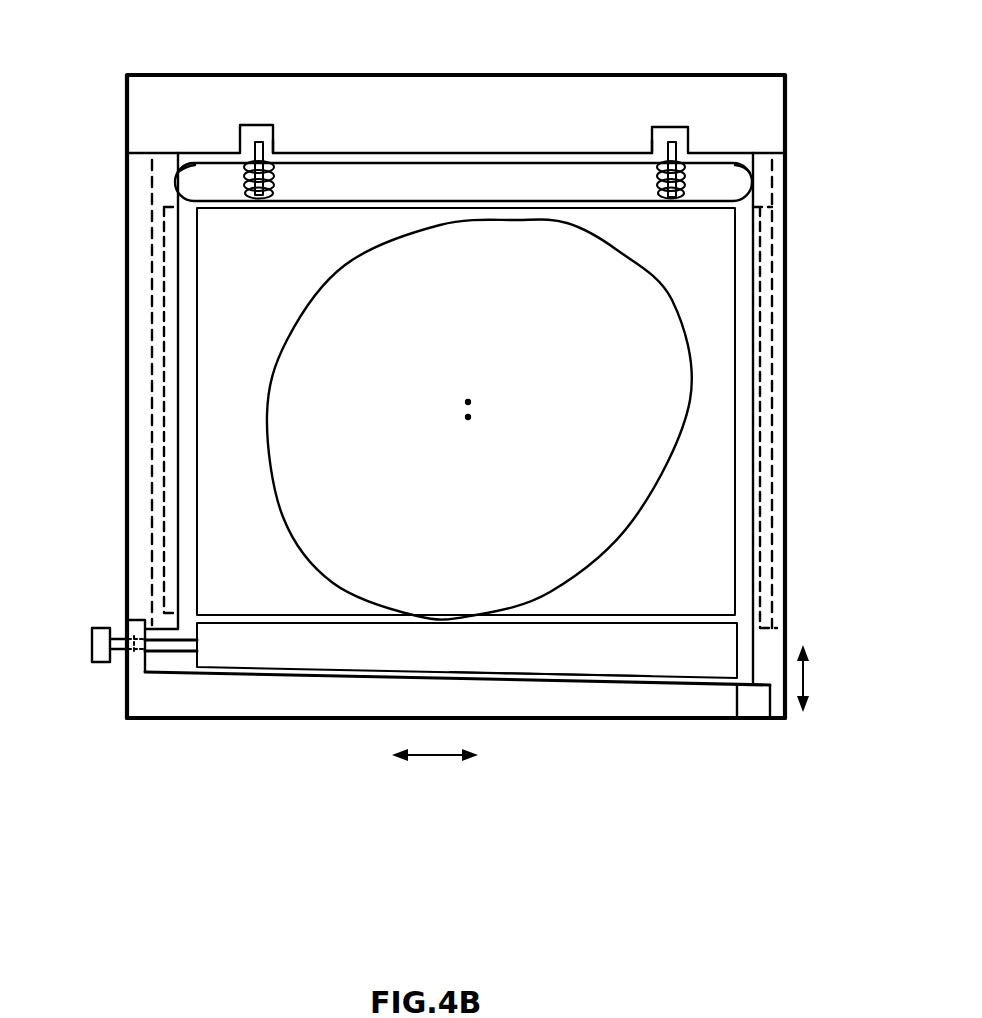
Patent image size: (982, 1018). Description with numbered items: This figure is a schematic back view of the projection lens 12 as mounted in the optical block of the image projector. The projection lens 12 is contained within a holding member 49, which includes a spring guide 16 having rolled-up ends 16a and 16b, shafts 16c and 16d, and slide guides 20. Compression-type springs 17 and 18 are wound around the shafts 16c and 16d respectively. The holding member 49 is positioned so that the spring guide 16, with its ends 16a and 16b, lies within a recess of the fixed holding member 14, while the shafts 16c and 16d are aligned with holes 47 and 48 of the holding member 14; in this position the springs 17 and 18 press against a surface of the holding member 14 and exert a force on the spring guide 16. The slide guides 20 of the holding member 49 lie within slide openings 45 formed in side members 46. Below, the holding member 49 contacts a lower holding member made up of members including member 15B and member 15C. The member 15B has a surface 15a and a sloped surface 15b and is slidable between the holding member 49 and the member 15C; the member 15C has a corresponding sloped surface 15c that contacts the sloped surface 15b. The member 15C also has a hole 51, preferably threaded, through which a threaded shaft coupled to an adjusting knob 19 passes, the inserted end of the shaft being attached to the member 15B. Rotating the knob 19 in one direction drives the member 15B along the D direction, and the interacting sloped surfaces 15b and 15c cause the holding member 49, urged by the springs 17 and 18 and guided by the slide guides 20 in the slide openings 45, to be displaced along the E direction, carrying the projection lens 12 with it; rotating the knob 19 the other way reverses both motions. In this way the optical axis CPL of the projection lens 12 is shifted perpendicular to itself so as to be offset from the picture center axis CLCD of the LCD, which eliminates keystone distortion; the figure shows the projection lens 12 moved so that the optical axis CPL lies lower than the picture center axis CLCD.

The projection lens 12 is at (280, 477).
The holding member 14 is at (773, 118).
The surface 15a is at (363, 617).
The sloped surface 15b is at (549, 677).
The member 15B is at (313, 657).
The sloped surface 15c is at (625, 693).
The member 15C is at (208, 698).
The spring guide 16 is at (753, 187).
The end of spring guide 16a is at (218, 163).
The end of spring guide 16b is at (717, 163).
The shaft 16c is at (277, 143).
The shaft 16d is at (653, 157).
The spring 17 is at (277, 175).
The spring 18 is at (657, 177).
The adjusting knob 19 is at (107, 667).
The slide guides 20 is at (165, 352).
The slide openings 45 is at (128, 432).
The side members 46 is at (155, 557).
The hole 47 is at (261, 120).
The hole 48 is at (675, 120).
The holding member 49 is at (718, 437).
The hole 51 is at (137, 660).
The picture center axis CLCD is at (470, 401).
The optical axis CPL is at (468, 419).
The direction D is at (441, 760).
The direction E is at (806, 677).